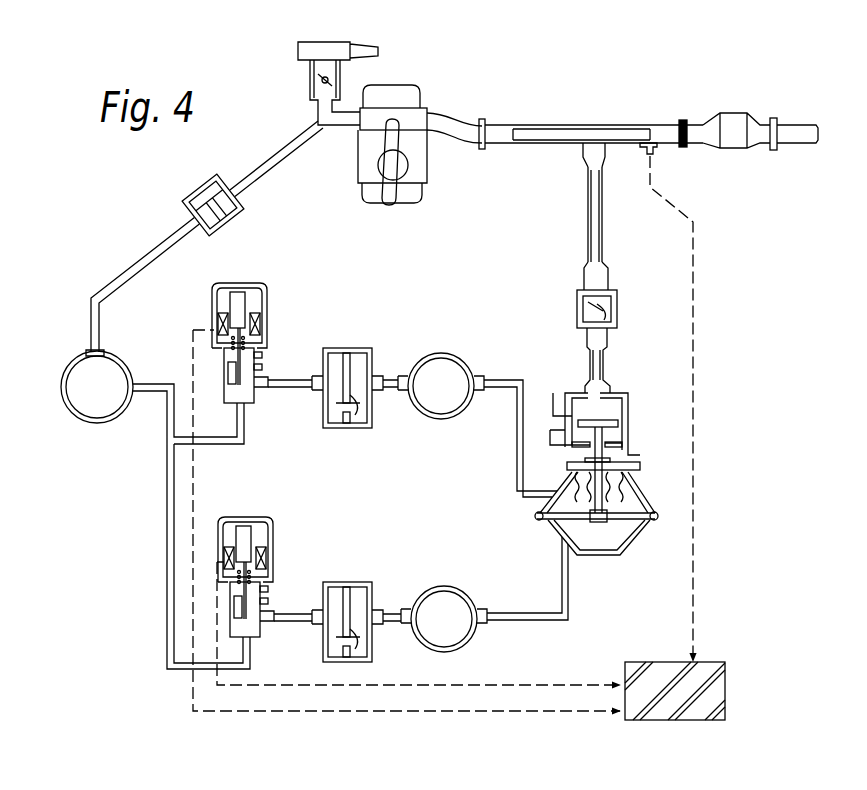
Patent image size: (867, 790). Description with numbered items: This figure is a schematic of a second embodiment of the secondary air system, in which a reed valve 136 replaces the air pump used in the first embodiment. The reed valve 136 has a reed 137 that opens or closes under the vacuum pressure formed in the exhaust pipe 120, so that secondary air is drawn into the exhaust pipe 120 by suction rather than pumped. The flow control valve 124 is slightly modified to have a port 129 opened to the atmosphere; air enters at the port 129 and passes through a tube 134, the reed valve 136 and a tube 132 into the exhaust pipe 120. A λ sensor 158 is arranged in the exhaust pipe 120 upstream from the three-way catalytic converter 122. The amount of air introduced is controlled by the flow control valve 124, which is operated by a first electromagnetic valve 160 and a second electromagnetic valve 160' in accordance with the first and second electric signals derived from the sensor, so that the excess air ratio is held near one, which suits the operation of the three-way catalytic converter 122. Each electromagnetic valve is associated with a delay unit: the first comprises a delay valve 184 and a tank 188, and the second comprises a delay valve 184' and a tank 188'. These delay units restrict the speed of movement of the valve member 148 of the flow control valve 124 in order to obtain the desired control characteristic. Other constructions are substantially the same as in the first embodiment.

The exhaust pipe 120 is at (577, 126).
The three-way catalytic converter 122 is at (730, 118).
The λ sensor 158 is at (652, 150).
The tube 132 is at (600, 232).
The reed valve 136 is at (687, 307).
The reed 137 is at (612, 318).
The tube 134 is at (605, 362).
The port 129 is at (558, 398).
The flow control valve 124 is at (641, 418).
The valve member 148 is at (612, 432).
The first electromagnetic valve 160 is at (271, 339).
The delay valve 184 is at (371, 369).
The tank 188 is at (452, 366).
The second electromagnetic valve 160' is at (280, 556).
The delay valve 184' is at (361, 596).
The tank 188' is at (456, 598).